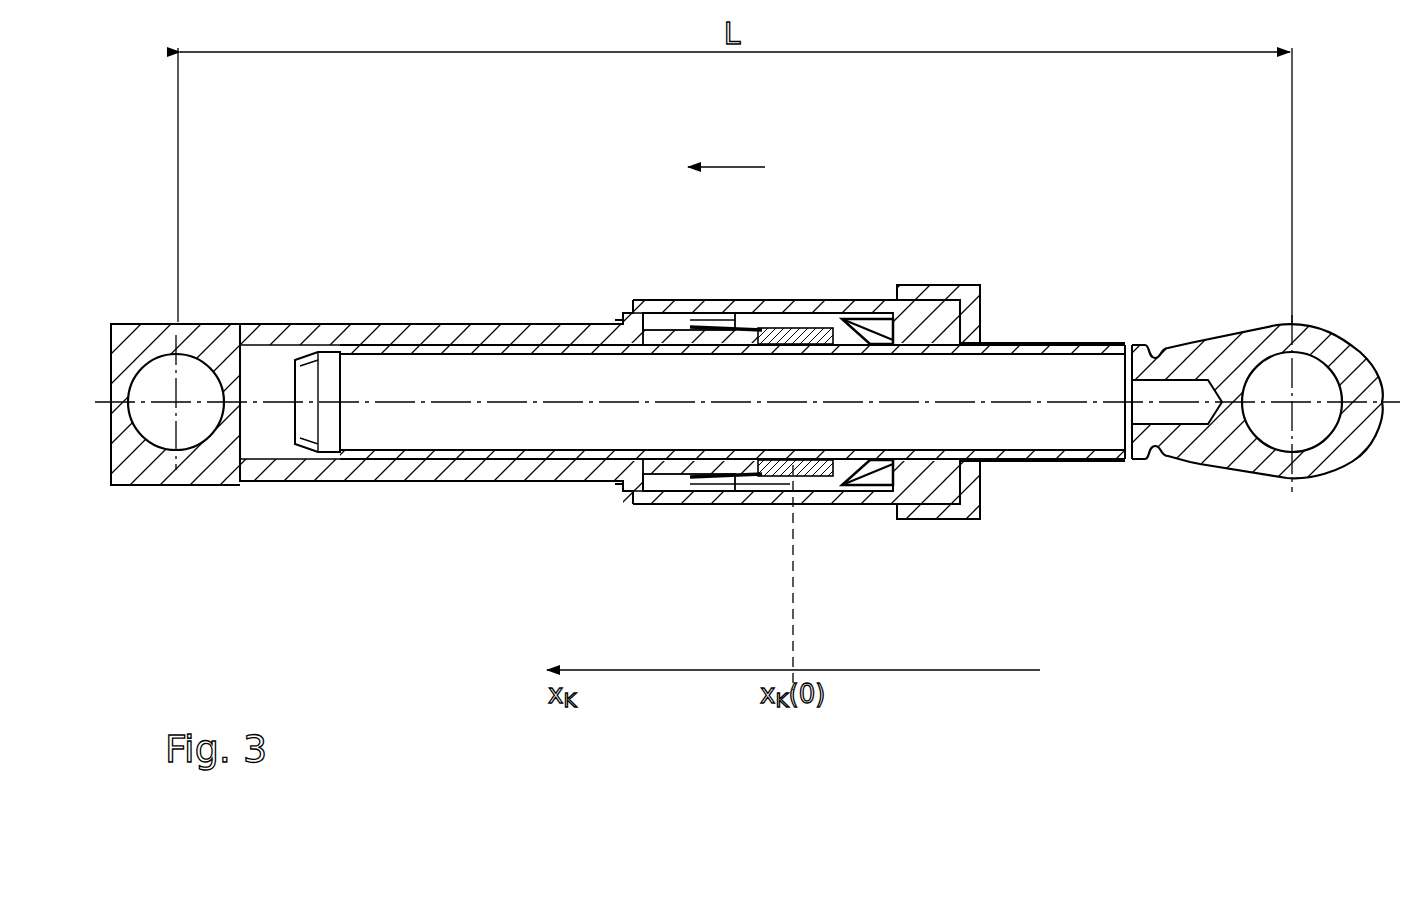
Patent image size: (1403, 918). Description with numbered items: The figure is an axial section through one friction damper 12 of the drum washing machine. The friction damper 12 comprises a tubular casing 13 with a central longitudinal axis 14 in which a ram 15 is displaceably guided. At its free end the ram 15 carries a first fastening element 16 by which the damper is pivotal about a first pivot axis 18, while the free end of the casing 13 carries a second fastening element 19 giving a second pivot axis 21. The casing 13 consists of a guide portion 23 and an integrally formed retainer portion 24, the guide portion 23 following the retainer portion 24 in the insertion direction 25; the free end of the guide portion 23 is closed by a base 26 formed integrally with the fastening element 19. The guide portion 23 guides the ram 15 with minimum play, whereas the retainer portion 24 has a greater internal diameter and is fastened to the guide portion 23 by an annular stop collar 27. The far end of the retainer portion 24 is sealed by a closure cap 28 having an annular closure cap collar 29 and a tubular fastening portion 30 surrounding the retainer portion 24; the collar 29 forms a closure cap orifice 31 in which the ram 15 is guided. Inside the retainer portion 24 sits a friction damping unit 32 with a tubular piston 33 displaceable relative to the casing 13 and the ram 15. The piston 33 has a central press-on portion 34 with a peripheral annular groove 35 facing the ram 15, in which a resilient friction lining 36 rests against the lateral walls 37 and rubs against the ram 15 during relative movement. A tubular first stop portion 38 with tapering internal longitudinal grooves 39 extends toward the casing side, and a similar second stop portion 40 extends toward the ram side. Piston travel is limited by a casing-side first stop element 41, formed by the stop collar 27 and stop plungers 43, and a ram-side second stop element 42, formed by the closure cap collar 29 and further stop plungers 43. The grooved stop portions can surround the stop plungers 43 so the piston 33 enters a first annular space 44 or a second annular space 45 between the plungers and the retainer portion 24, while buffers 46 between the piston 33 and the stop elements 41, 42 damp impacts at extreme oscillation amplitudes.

The friction damper 12 is at (469, 250).
The tubular casing 13 is at (343, 312).
The central longitudinal axis 14 is at (272, 405).
The ram 15 is at (1172, 345).
The first fastening element 16 is at (1345, 353).
The first pivot axis 18 is at (1297, 398).
The second fastening element 19 is at (155, 340).
The second pivot axis 21 is at (172, 405).
The guide portion 23 is at (430, 323).
The retainer portion 24 is at (695, 305).
The insertion direction 25 is at (727, 166).
The base 26 is at (245, 352).
The stop collar 27 is at (622, 318).
The closure cap 28 is at (945, 282).
The closure cap collar 29 is at (977, 484).
The fastening portion 30 is at (946, 330).
The closure cap orifice 31 is at (1124, 333).
The friction damping unit 32 is at (785, 283).
The piston 33 is at (748, 500).
The press-on portion 34 is at (778, 487).
The annular groove 35 is at (777, 323).
The friction lining 36 is at (812, 326).
The lateral walls 37 is at (852, 320).
The first stop portion 38 is at (693, 487).
The longitudinal grooves 39 is at (728, 485).
The second stop portion 40 is at (875, 484).
The first stop element 41 is at (647, 497).
The second stop element 42 is at (985, 343).
The stop plungers 43 is at (655, 303).
The first annular space 44 is at (663, 320).
The second annular space 45 is at (925, 492).
The buffers 46 is at (899, 497).